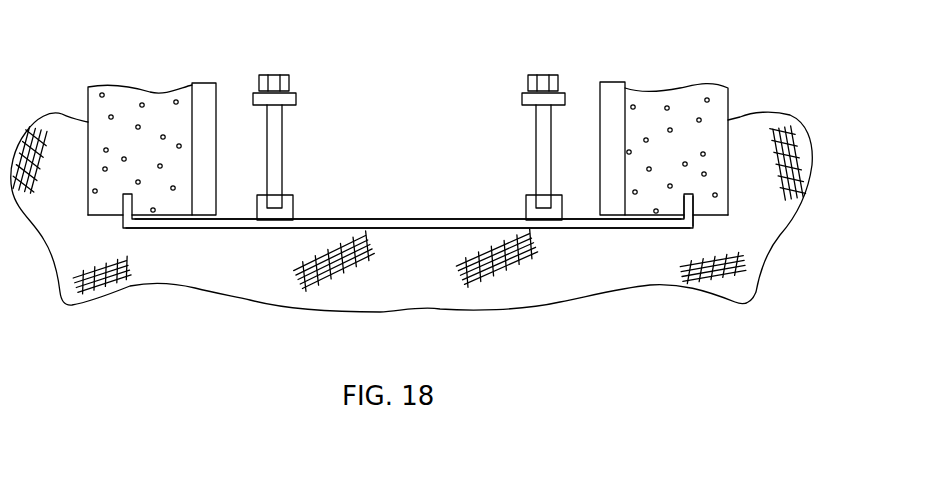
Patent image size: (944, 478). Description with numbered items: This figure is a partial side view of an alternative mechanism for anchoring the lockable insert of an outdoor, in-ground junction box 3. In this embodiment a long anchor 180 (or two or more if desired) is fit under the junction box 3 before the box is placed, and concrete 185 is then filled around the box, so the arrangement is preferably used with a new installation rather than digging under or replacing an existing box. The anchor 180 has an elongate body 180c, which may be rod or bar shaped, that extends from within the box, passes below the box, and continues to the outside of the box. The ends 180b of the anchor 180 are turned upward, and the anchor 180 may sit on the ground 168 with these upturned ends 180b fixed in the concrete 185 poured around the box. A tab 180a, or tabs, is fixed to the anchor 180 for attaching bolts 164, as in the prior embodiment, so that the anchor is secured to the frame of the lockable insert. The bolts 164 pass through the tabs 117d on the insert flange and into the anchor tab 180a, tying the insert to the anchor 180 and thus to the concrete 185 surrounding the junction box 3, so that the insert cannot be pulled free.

The junction box 3 is at (218, 88).
The concrete 185 is at (641, 90).
The tabs 117d is at (297, 101).
The bolts 164 is at (283, 137).
The anchor 180 is at (466, 247).
The tab 180a is at (294, 205).
The ends 180b is at (697, 200).
The elongate body 180c is at (236, 229).
The ground 168 is at (293, 311).